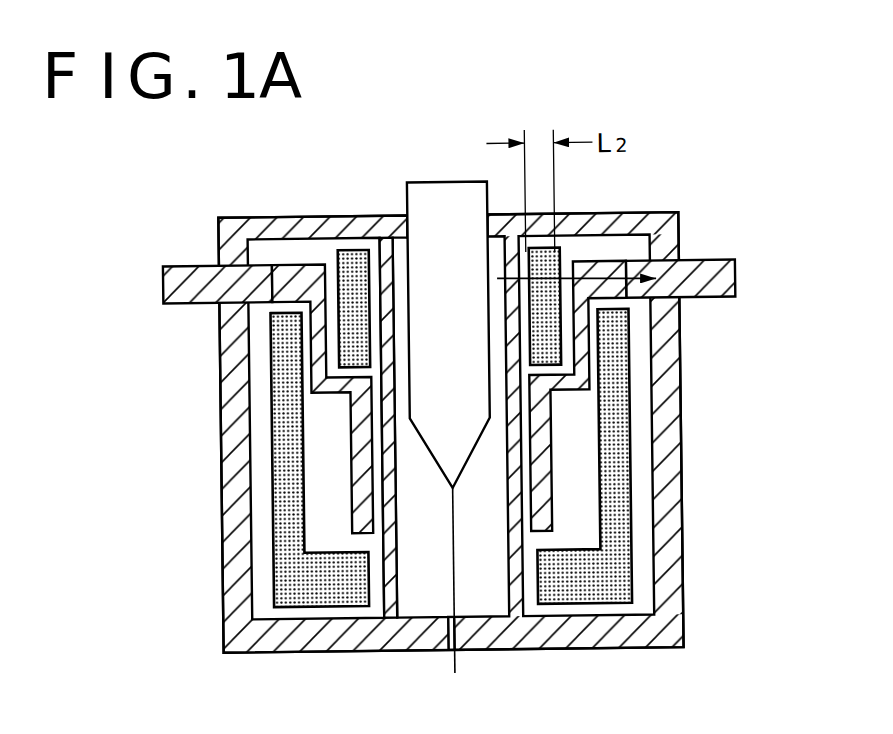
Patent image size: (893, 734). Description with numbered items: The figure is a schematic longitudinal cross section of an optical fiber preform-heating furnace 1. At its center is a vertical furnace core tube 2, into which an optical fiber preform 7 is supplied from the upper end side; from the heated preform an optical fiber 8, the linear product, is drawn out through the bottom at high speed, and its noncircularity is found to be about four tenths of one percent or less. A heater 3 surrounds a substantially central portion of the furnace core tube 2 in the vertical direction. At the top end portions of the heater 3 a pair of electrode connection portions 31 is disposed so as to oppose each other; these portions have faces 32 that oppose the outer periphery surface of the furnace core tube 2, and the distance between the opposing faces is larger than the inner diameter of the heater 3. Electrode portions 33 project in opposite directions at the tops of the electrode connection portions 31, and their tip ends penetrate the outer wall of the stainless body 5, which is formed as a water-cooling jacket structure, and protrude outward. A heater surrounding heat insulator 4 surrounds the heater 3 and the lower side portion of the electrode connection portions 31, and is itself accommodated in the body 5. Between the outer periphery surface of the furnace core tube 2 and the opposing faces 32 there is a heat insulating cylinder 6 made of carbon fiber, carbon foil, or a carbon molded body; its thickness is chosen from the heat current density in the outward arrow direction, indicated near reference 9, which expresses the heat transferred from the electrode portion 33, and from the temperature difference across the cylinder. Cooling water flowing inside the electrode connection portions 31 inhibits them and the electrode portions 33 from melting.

The optical fiber preform-heating furnace 1 is at (212, 209).
The furnace core tube 2 is at (394, 536).
The heater 3 is at (552, 427).
The heater surrounding heat insulator 4 is at (292, 418).
The stainless body 5 is at (682, 511).
The heat insulating cylinder 6 is at (349, 251).
The optical fiber preform 7 is at (430, 210).
The optical fiber 8 is at (448, 580).
The passage (gap) with flow direction 9 is at (572, 264).
The electrode connection portions 31 is at (589, 338).
The opposing faces 32 is at (562, 271).
The electrode portions 33 is at (207, 275).